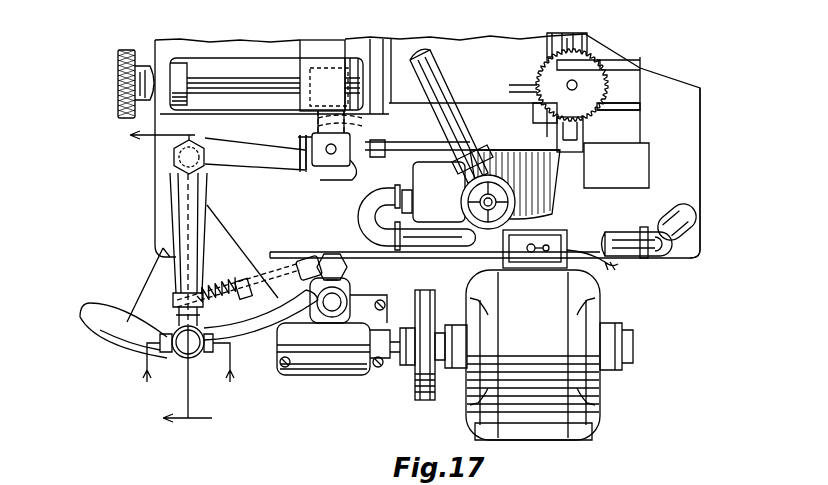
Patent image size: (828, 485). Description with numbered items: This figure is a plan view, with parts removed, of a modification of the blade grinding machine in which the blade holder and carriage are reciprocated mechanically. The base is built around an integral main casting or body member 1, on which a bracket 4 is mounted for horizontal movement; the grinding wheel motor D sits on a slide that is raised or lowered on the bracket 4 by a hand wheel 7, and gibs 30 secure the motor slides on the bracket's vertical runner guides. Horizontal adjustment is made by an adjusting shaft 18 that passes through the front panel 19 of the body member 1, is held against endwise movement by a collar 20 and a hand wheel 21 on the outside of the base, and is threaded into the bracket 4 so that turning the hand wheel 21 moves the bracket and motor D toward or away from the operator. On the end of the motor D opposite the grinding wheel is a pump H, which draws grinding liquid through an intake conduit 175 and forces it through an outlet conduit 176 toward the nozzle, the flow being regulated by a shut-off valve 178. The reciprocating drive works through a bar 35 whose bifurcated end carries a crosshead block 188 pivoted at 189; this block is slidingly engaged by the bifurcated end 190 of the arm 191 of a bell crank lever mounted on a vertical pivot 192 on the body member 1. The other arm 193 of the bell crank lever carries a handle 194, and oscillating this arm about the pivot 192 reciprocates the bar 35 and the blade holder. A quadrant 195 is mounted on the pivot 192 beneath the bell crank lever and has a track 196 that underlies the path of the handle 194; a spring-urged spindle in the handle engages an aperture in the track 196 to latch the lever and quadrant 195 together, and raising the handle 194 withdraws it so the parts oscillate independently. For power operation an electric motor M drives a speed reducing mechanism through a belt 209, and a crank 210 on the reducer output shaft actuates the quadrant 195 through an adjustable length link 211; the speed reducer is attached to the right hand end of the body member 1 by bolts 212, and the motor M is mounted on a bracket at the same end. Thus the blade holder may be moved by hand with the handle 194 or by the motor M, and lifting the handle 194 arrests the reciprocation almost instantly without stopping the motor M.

The main casting or body member 1 is at (704, 175).
The bracket 4 is at (606, 116).
The hand wheel 7 is at (538, 86).
The adjusting shaft 18 is at (261, 94).
The front panel 19 is at (164, 279).
The collar 20 is at (183, 368).
The hand wheel 21 is at (118, 60).
The gibs 30 is at (584, 152).
The bar 35 is at (326, 78).
The intake conduit 175 is at (690, 233).
The outlet conduit 176 is at (454, 97).
The shut-off valve 178 is at (463, 194).
The crosshead block 188 is at (305, 168).
The pivot 189 is at (331, 149).
The bifurcated end 190 is at (297, 182).
The arm 191 is at (247, 160).
The vertical pivot 192 is at (170, 166).
The arm 193 is at (182, 219).
The handle 194 is at (214, 333).
The quadrant 195 is at (157, 272).
The track 196 is at (108, 312).
The belt 209 is at (428, 400).
The crank 210 is at (350, 287).
The adjustable length link 211 is at (285, 275).
The bolts 212 is at (358, 256).
The motor D is at (501, 72).
The pump H is at (542, 190).
The electric motor M is at (600, 382).